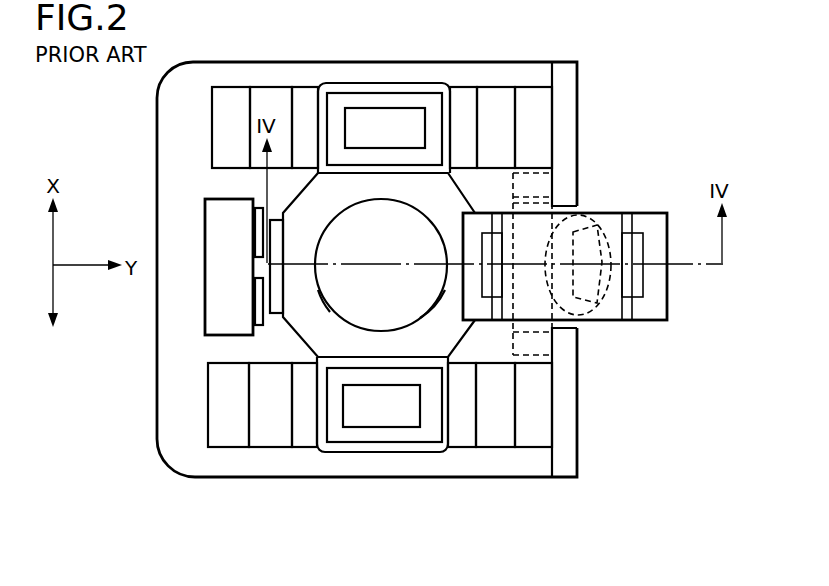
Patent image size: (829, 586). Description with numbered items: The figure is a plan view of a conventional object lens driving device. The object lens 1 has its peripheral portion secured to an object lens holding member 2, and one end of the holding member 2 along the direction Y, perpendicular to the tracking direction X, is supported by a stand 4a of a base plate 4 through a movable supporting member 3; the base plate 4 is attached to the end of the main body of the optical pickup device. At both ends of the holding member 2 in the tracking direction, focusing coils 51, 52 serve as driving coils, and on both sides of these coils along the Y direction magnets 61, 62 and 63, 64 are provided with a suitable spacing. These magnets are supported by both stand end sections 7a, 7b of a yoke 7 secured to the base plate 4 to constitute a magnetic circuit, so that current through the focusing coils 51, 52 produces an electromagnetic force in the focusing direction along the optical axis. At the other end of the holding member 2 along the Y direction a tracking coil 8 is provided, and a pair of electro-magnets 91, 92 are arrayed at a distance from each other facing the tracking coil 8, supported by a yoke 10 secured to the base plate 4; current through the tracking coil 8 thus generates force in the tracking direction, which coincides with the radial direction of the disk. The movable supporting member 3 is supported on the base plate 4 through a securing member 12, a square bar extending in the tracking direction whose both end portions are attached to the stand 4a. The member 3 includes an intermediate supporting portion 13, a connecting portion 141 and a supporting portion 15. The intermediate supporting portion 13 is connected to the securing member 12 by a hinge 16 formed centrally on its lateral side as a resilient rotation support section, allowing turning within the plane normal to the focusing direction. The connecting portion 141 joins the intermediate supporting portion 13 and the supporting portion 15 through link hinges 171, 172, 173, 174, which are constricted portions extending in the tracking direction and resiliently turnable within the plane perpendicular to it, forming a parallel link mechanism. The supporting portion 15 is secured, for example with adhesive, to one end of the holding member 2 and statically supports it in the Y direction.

The object lens 1 is at (337, 297).
The object lens holding member 2 is at (305, 210).
The movable supporting member 3 is at (680, 190).
The base plate 4 is at (168, 428).
The stand 4a is at (562, 83).
The yoke 7 is at (310, 97).
The stand end section 7a is at (237, 95).
The stand end section 7b is at (538, 100).
The tracking coil 8 is at (270, 272).
The yoke 10 is at (217, 253).
The securing member 12 is at (555, 320).
The intermediate supporting portion 13 is at (655, 283).
The supporting portion 15 is at (465, 252).
The hinge 16 is at (560, 263).
The focusing coil 51 is at (395, 92).
The focusing coil 52 is at (353, 447).
The magnet 61 is at (277, 98).
The magnet 62 is at (500, 95).
The magnet 63 is at (270, 432).
The magnet 64 is at (497, 437).
The electro-magnet 91 is at (252, 235).
The electro-magnet 92 is at (257, 298).
The connecting portion 141 is at (593, 213).
The link hinge 171 is at (472, 308).
The link hinge 172 is at (637, 313).
The link hinge 173 is at (475, 207).
The link hinge 174 is at (633, 212).